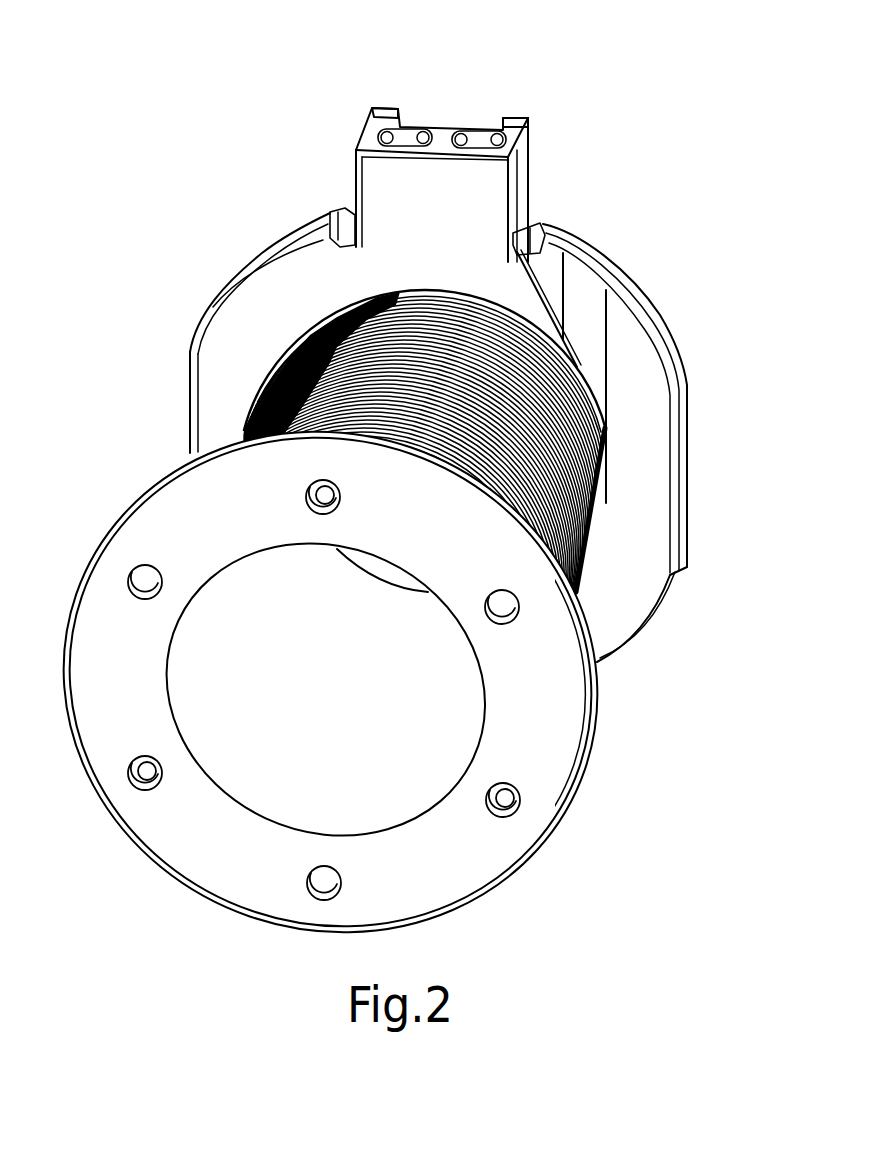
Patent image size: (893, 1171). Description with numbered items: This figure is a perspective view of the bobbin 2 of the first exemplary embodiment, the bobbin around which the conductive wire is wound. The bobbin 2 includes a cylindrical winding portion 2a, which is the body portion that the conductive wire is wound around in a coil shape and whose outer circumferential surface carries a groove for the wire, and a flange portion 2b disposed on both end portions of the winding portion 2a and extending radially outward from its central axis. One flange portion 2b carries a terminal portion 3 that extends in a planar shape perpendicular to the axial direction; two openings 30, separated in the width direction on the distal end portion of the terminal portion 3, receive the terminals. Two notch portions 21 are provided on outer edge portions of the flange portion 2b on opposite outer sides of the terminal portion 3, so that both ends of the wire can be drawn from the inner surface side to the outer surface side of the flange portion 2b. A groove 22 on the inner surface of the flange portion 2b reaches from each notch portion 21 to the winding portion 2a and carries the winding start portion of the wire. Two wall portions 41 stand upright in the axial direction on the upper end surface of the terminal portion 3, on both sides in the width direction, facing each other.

The bobbin 2 is at (98, 261).
The winding portion 2a is at (592, 475).
The flange portion 2b is at (652, 323).
The terminal portion 3 is at (441, 203).
The notch portion 21 is at (350, 227).
The groove 22 is at (550, 310).
The opening 30 is at (403, 127).
The wall portion 41 is at (383, 103).